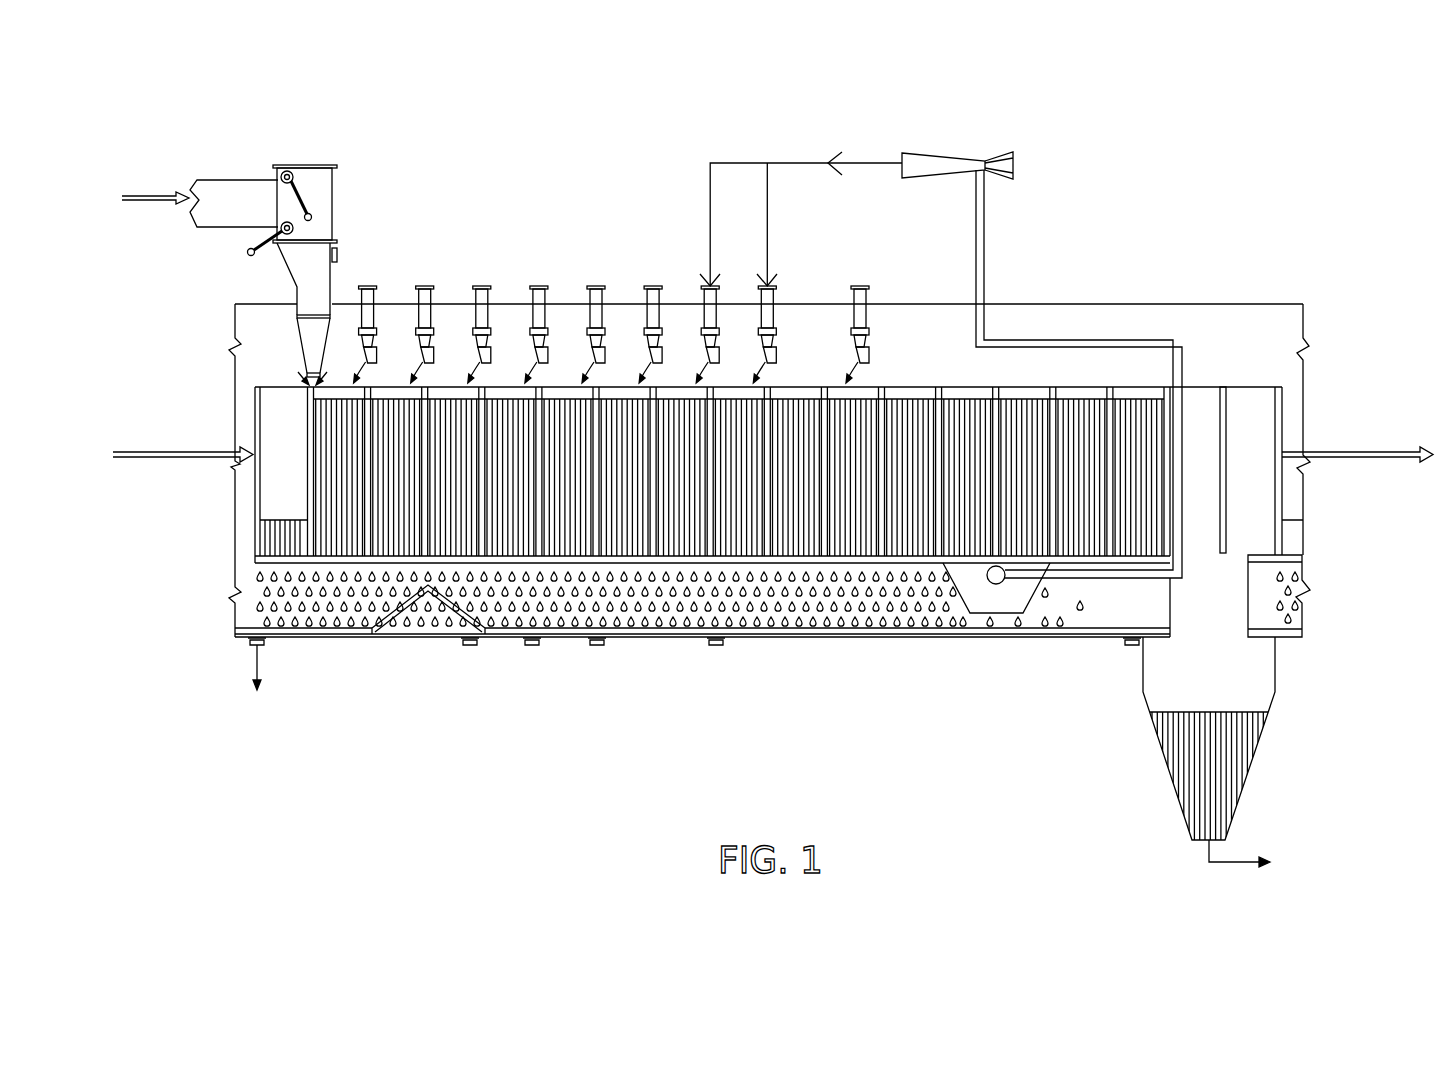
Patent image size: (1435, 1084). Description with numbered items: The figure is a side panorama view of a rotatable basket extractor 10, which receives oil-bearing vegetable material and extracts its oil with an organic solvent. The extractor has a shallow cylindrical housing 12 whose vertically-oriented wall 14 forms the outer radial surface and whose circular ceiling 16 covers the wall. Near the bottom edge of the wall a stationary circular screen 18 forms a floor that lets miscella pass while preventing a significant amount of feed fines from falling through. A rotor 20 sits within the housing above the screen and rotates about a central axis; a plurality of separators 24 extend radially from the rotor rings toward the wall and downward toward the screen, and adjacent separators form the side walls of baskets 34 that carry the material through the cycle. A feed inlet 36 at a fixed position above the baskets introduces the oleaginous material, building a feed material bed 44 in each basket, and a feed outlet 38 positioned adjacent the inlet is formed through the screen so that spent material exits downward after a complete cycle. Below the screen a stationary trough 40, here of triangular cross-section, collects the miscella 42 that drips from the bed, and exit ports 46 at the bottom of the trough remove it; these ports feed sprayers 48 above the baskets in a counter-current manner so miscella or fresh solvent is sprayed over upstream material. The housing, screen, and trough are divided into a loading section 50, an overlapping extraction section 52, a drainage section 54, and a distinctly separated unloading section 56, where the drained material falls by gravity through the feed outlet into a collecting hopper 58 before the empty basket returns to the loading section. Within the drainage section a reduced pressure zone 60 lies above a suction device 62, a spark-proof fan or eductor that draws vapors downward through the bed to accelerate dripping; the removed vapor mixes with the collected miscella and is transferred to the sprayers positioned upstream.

The rotatable basket extractor 10 is at (496, 162).
The housing 12 is at (1246, 325).
The wall 14 is at (1201, 327).
The ceiling 16 is at (1301, 304).
The screen 18 is at (243, 560).
The rotor 20 is at (275, 492).
The separators 24 is at (997, 387).
The baskets 34 is at (277, 405).
The feed inlet 36 is at (318, 274).
The feed outlet 38 is at (1223, 582).
The trough 40 is at (236, 635).
The miscella 42 is at (262, 620).
The feed material bed 44 is at (330, 413).
The exit ports 46 is at (542, 648).
The sprayers 48 is at (603, 286).
The loading section 50 is at (337, 690).
The extraction section 52 is at (905, 722).
The drainage section 54 is at (1143, 722).
The unloading section 56 is at (1268, 878).
The collecting hopper 58 is at (1222, 756).
The reduced pressure zone 60 is at (1050, 663).
The suction device 62 is at (980, 172).